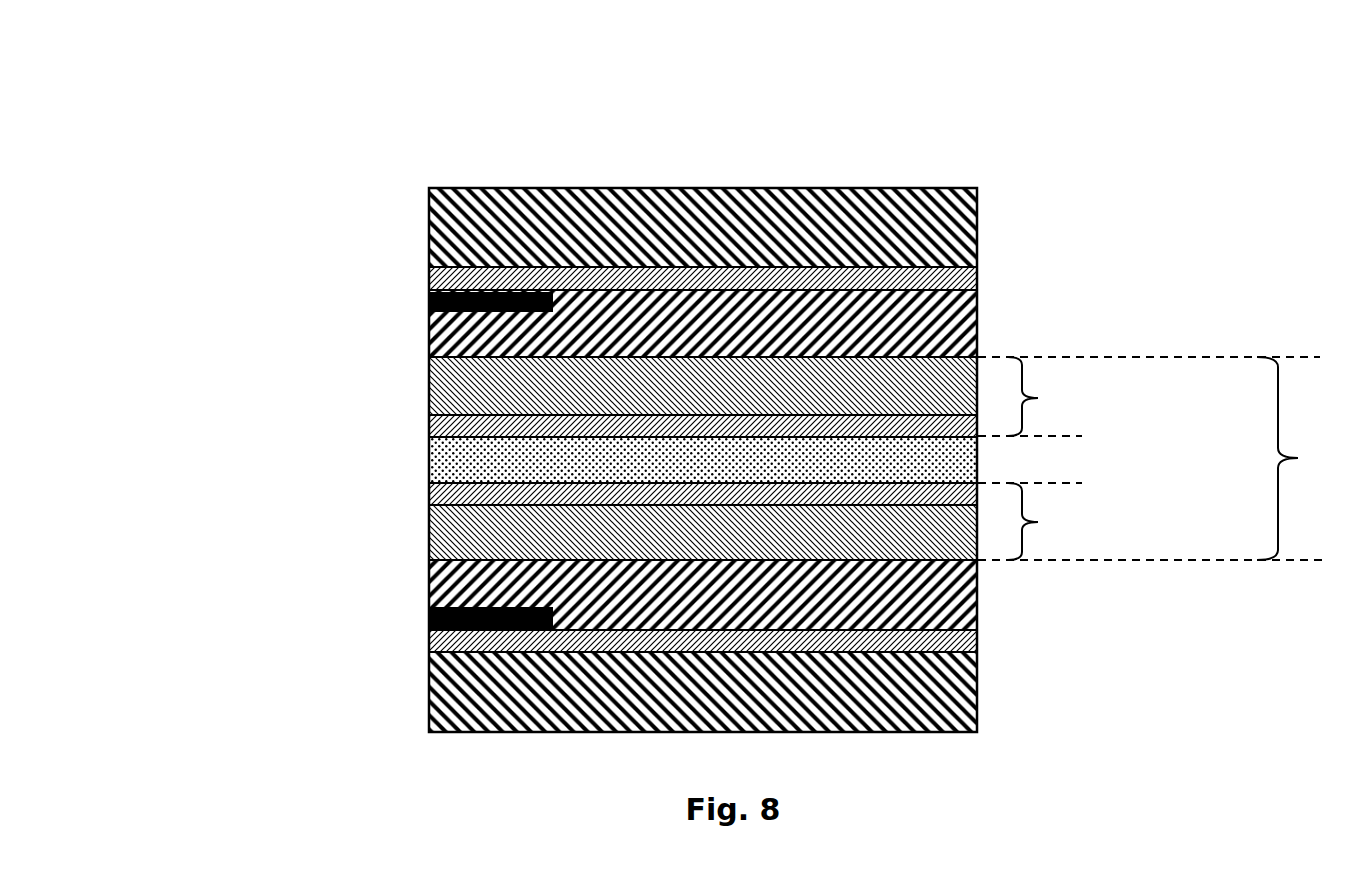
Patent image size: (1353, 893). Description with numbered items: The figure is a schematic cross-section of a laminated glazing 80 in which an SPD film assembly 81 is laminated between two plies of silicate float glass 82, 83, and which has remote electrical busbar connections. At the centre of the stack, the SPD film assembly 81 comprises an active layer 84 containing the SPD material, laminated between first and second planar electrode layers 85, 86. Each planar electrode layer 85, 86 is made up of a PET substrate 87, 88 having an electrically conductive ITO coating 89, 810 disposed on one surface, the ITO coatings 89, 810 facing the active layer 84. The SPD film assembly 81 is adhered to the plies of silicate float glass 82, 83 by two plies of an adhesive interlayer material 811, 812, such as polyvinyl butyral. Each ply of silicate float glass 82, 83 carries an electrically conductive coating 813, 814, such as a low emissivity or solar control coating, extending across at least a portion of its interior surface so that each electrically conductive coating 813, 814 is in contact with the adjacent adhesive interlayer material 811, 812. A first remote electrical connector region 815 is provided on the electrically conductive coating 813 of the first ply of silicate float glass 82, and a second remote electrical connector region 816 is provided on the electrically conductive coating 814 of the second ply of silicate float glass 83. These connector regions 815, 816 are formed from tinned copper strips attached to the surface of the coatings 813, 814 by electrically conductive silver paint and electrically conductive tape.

The laminated glazing 80 is at (875, 118).
The SPD film assembly 81 is at (1296, 458).
The first ply of silicate float glass 82 is at (932, 228).
The second ply of silicate float glass 83 is at (947, 705).
The active layer 84 is at (430, 464).
The first planar electrode layer 85 is at (1149, 396).
The second planar electrode layer 86 is at (1151, 521).
The PET substrate 87 is at (430, 391).
The PET substrate 88 is at (430, 536).
The electrically conductive ITO coating 89 is at (430, 427).
The electrically conductive ITO coating 810 is at (430, 492).
The adhesive interlayer material 811 is at (430, 337).
The adhesive interlayer material 812 is at (430, 588).
The electrically conductive coating 813 is at (960, 277).
The electrically conductive coating 814 is at (960, 638).
The first remote electrical connector region 815 is at (430, 298).
The second remote electrical connector region 816 is at (430, 615).